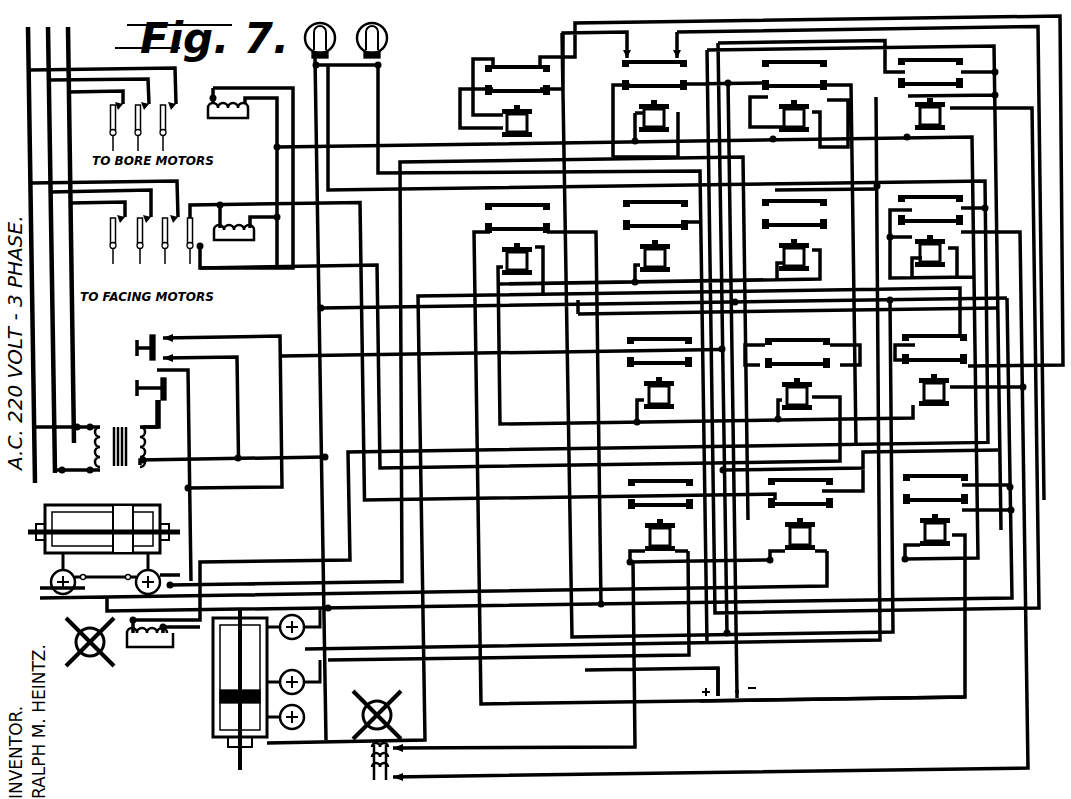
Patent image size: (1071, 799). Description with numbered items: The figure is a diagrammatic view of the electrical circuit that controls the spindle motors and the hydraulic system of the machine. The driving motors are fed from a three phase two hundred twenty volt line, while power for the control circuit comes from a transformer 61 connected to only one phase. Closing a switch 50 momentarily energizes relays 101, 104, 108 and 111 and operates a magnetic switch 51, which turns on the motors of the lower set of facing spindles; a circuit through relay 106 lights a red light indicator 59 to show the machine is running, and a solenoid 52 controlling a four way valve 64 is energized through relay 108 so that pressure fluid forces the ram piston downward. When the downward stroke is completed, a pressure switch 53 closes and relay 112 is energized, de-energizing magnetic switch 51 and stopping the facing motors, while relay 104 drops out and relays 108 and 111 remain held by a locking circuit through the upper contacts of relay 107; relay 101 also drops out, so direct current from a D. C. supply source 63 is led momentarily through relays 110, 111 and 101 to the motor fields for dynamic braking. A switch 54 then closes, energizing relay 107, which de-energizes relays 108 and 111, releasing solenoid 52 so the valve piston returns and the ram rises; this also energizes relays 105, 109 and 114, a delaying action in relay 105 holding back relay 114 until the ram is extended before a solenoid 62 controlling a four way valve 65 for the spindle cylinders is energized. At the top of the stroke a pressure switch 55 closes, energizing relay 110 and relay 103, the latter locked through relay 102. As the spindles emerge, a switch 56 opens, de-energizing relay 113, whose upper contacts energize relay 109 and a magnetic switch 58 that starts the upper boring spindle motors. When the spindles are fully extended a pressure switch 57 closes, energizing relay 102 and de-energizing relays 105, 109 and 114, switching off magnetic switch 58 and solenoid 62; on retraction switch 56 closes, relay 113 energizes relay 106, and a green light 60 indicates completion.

The switch 50 is at (130, 364).
The magnetic switch 51 is at (214, 244).
The solenoid 52 is at (370, 770).
The pressure switch 53 is at (293, 677).
The switch 54 is at (294, 732).
The pressure switch 55 is at (295, 621).
The switch 56 is at (50, 580).
The pressure switch 57 is at (157, 574).
The magnetic switch 58 is at (210, 98).
The red light indicator 59 is at (330, 30).
The green light 60 is at (384, 32).
The transformer 61 is at (106, 466).
The solenoid 62 is at (168, 647).
The D. C. supply source 63 is at (762, 720).
The four way valve 64 is at (378, 702).
The four way valve 65 is at (93, 658).
The relay 101 is at (545, 60).
The relay 102 is at (655, 45).
The relay 103 is at (762, 80).
The relay 104 is at (898, 82).
The relay 105 is at (482, 226).
The relay 106 is at (620, 210).
The relay 107 is at (789, 232).
The relay 108 is at (949, 200).
The relay 109 is at (670, 336).
The relay 110 is at (802, 339).
The relay 111 is at (950, 318).
The relay 112 is at (648, 519).
The relay 113 is at (780, 525).
The relay 114 is at (906, 484).